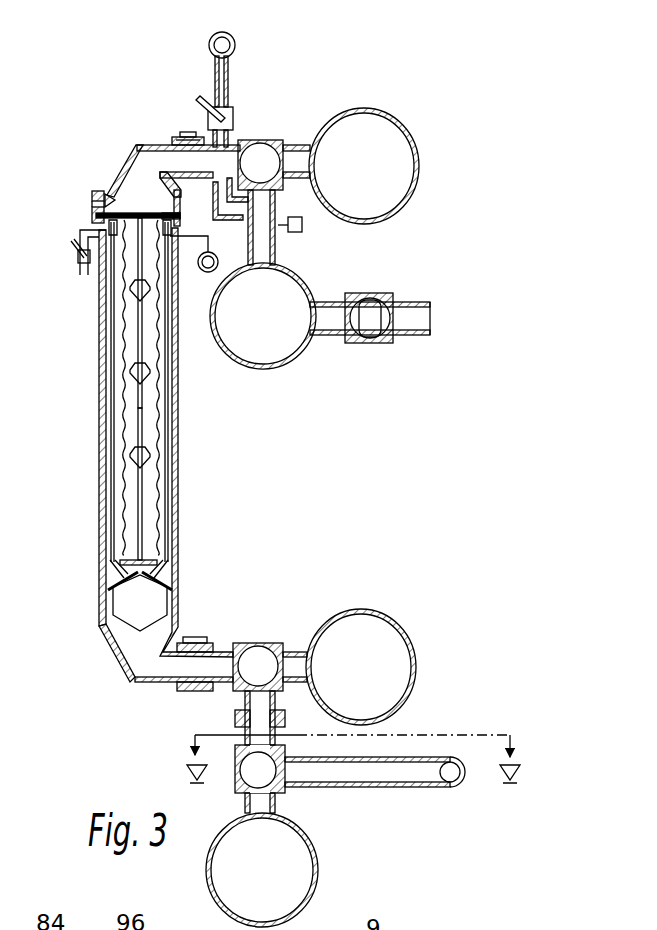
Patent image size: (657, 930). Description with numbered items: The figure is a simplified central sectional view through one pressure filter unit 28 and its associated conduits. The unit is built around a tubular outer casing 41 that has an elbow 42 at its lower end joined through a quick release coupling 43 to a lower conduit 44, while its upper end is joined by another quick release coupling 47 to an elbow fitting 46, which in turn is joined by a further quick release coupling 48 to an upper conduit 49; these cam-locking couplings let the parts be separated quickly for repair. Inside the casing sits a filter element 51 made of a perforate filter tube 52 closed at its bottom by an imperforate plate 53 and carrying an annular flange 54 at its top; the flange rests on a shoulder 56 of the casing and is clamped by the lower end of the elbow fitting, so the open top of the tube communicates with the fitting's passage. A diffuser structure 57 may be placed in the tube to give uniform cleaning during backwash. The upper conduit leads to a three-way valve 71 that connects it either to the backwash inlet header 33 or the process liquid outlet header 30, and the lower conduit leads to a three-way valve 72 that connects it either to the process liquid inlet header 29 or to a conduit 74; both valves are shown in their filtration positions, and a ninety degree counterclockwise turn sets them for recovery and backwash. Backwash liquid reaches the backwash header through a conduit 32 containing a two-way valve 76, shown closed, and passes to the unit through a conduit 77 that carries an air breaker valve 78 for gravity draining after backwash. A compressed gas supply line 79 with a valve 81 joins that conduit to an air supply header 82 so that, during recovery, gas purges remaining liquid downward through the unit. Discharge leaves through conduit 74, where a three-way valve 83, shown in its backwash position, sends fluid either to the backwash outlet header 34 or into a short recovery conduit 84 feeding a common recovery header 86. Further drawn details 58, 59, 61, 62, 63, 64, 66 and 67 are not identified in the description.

The pressure filter unit 28 is at (128, 442).
The process liquid inlet header 29 is at (358, 611).
The process liquid outlet header 30 is at (345, 111).
The conduit 32 is at (410, 302).
The backwash inlet header 33 is at (250, 369).
The backwash outlet header 34 is at (315, 857).
The tubular outer housing or casing 41 is at (105, 426).
The elbow 42 is at (120, 669).
The quick release coupling 43 is at (190, 692).
The conduit 44 is at (226, 650).
The elbow fitting 46 is at (125, 164).
The quick release coupling 47 is at (92, 201).
The quick release coupling 48 is at (182, 135).
The conduit 49 is at (232, 146).
The filter element 51 is at (162, 428).
The perforate filter tube 52 is at (162, 521).
The imperforate plate 53 is at (148, 557).
The annular flange 54 is at (180, 227).
The shoulder 56 is at (96, 216).
The diffuser structure 57 is at (130, 323).
The lower rod portion 58 is at (137, 522).
The float 59 is at (134, 462).
The chamber 61 is at (136, 212).
The outer wall 62 is at (173, 462).
The sight opening 63 is at (207, 272).
The inner tube 64 is at (112, 501).
The vent valve 66 is at (78, 258).
The nut 67 is at (130, 615).
The three-way valve 71 is at (263, 143).
The three-way valve 72 is at (262, 646).
The conduit 74 is at (278, 703).
The two-way valve 76 is at (360, 293).
The conduit 77 is at (276, 246).
The air breaker valve 78 is at (297, 218).
The compressed gas supply line 79 is at (214, 224).
The valve 81 is at (229, 106).
The air supply header 82 is at (231, 38).
The three-way valve 83 is at (238, 784).
The recovery system conduit 84 is at (365, 788).
The recovery header 86 is at (452, 788).